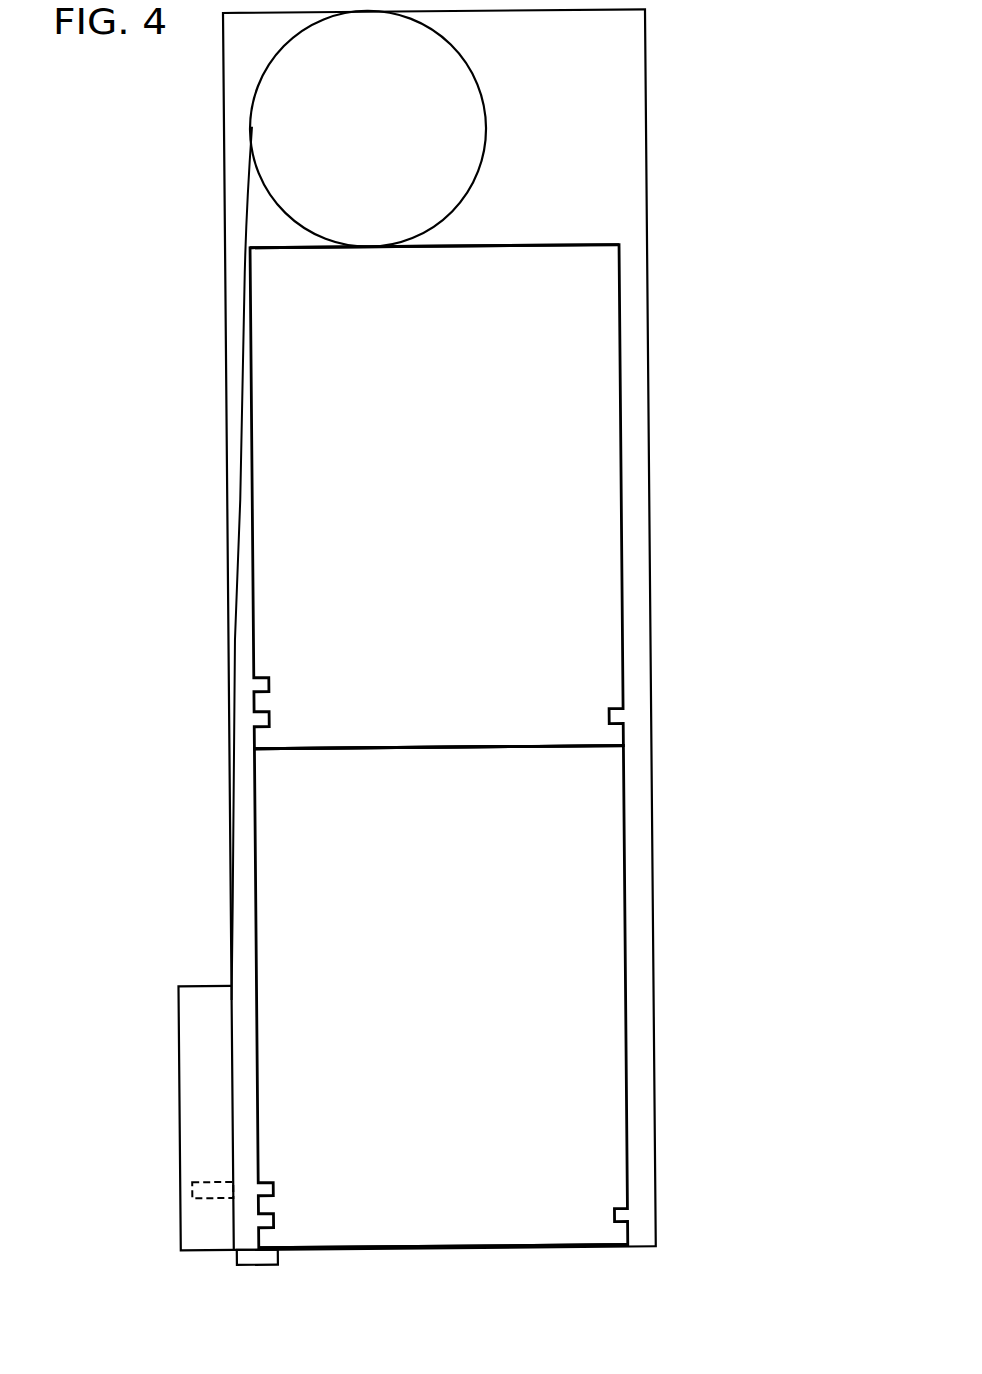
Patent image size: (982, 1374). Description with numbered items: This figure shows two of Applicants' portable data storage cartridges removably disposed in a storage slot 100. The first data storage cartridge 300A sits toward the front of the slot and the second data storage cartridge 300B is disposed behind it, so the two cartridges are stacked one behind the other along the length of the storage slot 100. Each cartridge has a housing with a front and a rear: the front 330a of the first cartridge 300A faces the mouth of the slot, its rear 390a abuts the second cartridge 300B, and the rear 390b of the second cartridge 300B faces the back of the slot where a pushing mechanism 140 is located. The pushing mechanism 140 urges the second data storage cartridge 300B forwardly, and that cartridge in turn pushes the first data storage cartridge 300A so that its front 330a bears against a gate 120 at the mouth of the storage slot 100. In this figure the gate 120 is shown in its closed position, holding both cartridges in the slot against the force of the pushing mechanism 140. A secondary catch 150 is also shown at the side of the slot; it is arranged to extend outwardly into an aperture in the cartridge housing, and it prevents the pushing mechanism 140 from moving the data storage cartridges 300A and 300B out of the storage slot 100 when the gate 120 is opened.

The storage slot 100 is at (635, 1270).
The gate 120 is at (272, 1253).
The pushing mechanism 140 is at (490, 117).
The secondary catch 150 is at (205, 1187).
The data storage cartridge 300A is at (460, 998).
The data storage cartridge 300B is at (457, 500).
The front 330a is at (568, 1245).
The rear 390a is at (563, 747).
The rear 390b is at (553, 247).